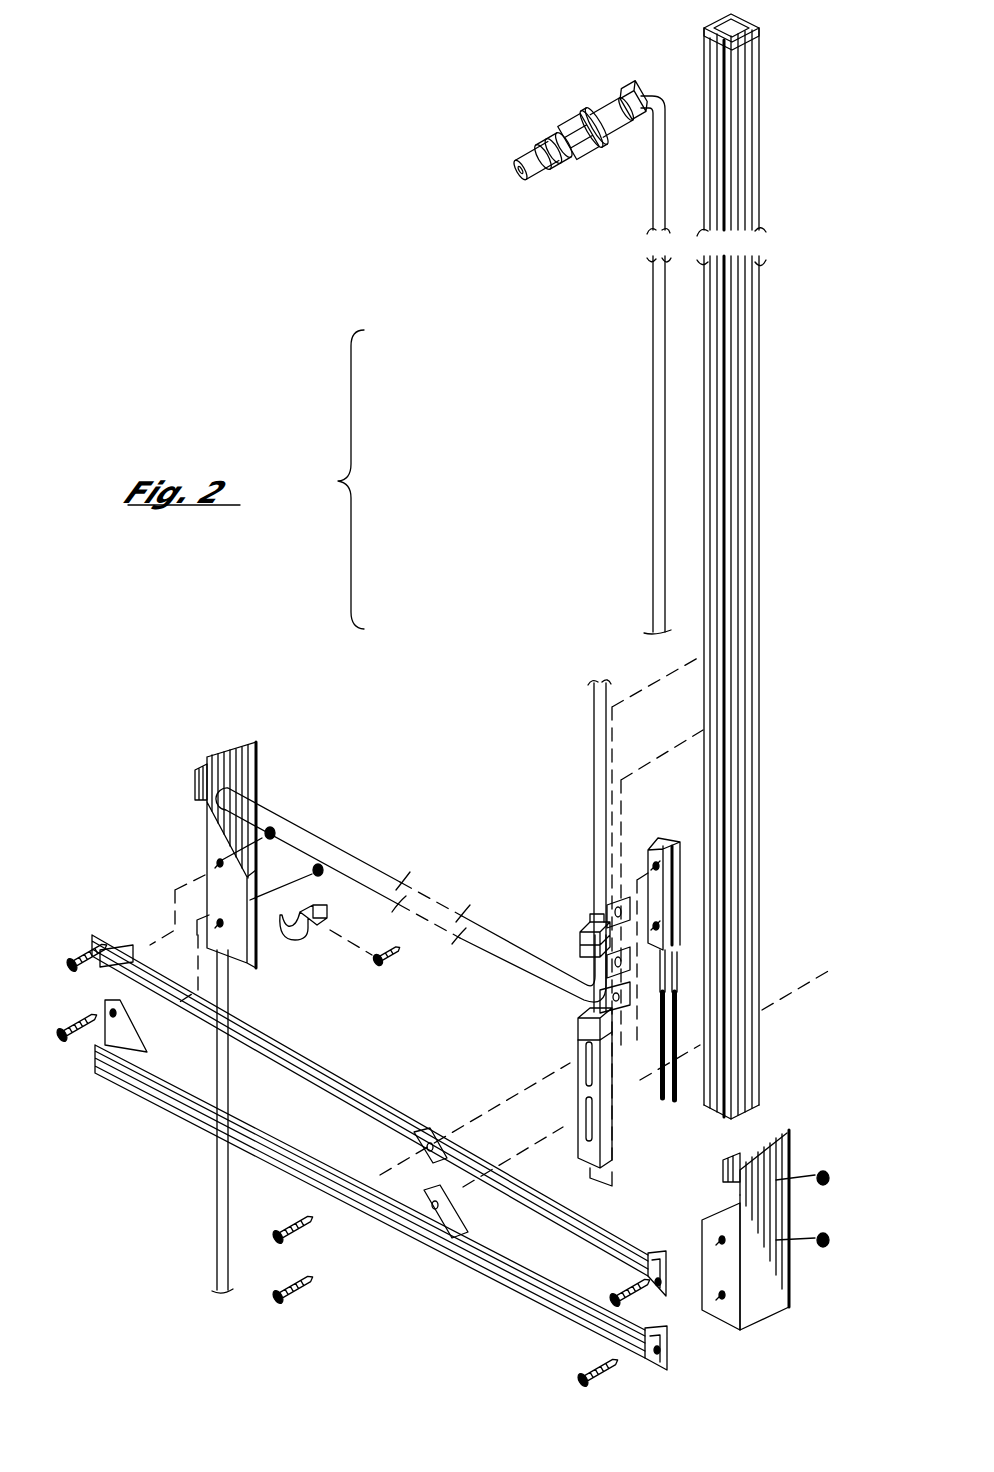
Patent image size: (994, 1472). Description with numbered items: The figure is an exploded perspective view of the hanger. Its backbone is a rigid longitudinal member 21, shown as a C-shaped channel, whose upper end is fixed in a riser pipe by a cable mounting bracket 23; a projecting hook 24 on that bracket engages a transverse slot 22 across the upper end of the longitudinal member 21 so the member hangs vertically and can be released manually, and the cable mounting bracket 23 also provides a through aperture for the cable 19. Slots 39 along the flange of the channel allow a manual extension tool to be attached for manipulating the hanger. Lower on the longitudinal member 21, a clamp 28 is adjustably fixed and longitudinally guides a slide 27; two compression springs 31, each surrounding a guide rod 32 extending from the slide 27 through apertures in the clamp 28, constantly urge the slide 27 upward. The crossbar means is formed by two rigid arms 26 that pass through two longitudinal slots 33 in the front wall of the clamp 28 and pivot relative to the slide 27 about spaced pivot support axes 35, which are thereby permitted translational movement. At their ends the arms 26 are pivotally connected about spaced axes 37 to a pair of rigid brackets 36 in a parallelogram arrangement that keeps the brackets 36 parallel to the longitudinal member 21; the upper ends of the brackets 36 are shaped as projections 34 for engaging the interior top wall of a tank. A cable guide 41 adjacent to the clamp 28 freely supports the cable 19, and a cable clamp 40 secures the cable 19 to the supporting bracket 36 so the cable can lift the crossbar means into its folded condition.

The cable 19 is at (656, 207).
The longitudinal member 21 is at (762, 583).
The transverse slot 22 is at (743, 28).
The cable mounting bracket 23 is at (588, 150).
The projecting hook 24 is at (633, 92).
The rigid arms 26 is at (323, 1052).
The slide 27 is at (648, 850).
The clamp 28 is at (578, 1038).
The compression springs 31 is at (665, 1093).
The guide rod 32 is at (662, 958).
The longitudinal slots 33 is at (582, 1122).
The projections 34 is at (250, 745).
The pivot support axes 35 is at (492, 1108).
The brackets 36 is at (258, 778).
The spaced axes 37 is at (183, 886).
The slots 39 is at (723, 152).
The cable clamp 40 is at (288, 941).
The cable guide 41 is at (580, 931).